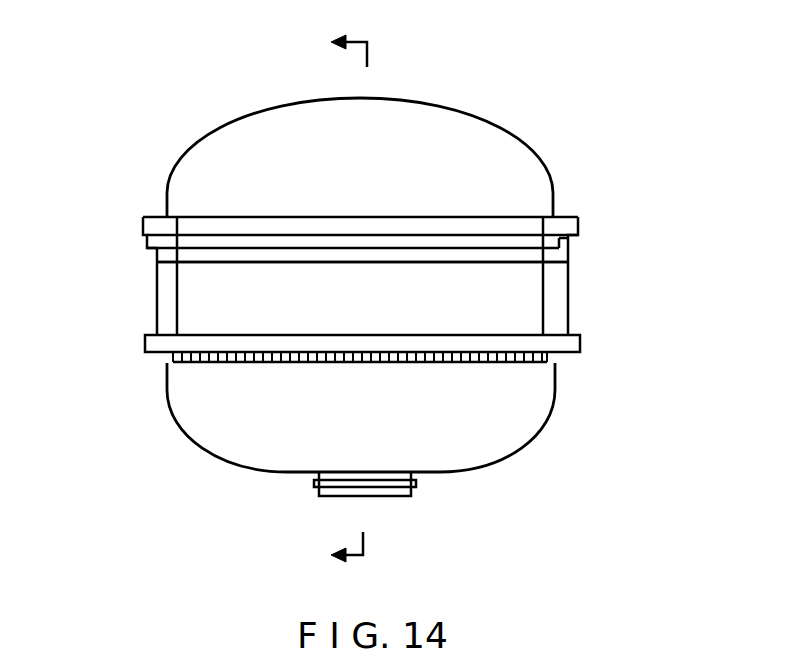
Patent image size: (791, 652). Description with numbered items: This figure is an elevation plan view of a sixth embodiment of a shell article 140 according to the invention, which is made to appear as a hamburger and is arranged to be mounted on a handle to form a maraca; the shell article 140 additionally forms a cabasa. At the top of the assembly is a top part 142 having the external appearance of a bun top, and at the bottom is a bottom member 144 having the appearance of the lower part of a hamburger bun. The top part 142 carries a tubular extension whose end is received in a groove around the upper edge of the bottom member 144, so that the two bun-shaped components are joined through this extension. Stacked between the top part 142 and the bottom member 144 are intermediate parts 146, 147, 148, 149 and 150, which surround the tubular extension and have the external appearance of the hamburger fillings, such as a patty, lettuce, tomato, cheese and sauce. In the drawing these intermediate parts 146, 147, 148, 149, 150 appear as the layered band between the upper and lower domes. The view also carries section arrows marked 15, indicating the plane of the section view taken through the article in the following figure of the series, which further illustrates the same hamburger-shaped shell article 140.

The section line of FIG. 15 is at (359, 300).
The shell article 140 is at (634, 172).
The top part 142 is at (490, 142).
The bottom member 144 is at (182, 413).
The intermediate part 146 is at (568, 224).
The intermediate part 147 is at (573, 243).
The intermediate part 148 is at (570, 257).
The intermediate part 149 is at (163, 292).
The intermediate part 150 is at (563, 344).